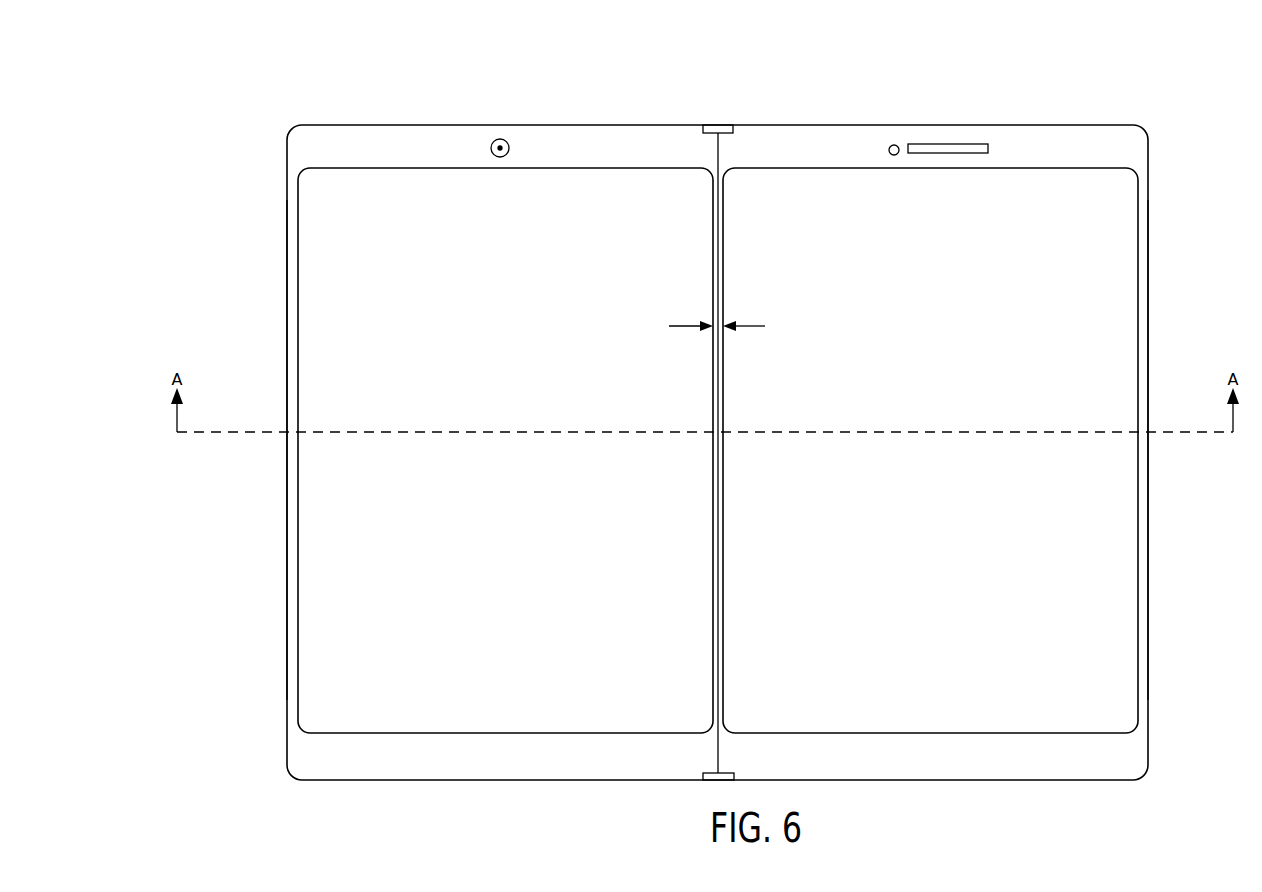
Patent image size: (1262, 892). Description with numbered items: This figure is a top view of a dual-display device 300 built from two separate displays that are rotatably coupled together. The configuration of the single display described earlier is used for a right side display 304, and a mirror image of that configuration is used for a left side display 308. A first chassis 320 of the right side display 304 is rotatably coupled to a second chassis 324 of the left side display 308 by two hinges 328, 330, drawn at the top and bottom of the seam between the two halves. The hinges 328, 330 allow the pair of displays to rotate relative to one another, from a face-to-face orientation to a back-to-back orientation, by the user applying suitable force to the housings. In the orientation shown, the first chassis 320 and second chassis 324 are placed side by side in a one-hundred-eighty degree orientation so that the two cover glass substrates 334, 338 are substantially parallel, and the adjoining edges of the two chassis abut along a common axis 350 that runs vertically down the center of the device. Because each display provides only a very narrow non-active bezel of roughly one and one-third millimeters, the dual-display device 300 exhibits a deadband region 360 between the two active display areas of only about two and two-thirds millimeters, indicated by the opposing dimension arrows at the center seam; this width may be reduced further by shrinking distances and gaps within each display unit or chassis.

The dual-display device 300 is at (634, 82).
The right side display 304 is at (1180, 200).
The left side display 308 is at (240, 198).
The first chassis 320 is at (1148, 592).
The second chassis 324 is at (287, 578).
The hinge 328 is at (718, 133).
The hinge 330 is at (718, 780).
The cover glass substrate 334 is at (993, 253).
The cover glass substrate 338 is at (502, 253).
The common axis 350 is at (720, 157).
The deadband region 360 is at (688, 326).